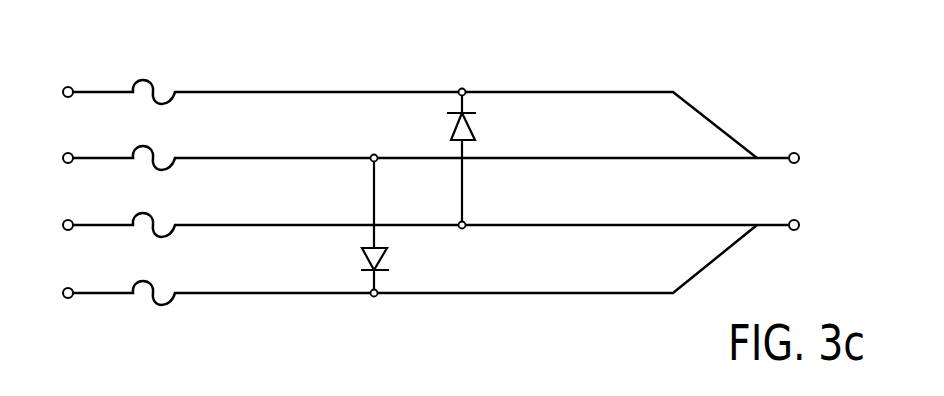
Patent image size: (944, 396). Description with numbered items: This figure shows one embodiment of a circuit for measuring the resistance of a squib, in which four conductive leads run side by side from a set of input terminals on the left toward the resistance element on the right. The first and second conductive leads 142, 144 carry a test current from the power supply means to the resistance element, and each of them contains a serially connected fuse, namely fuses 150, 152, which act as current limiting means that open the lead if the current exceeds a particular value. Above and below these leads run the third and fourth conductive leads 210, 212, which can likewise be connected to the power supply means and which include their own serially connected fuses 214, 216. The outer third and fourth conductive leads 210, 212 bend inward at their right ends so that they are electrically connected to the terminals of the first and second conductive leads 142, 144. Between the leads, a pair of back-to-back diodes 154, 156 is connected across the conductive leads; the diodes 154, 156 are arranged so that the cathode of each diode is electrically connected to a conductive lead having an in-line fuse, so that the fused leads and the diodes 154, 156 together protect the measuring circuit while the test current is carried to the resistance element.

The fuse 214 is at (153, 88).
The fuse 150 is at (153, 154).
The fuse 152 is at (153, 221).
The fuse 216 is at (153, 289).
The third conductive lead 210 is at (572, 92).
The fourth conductive lead 212 is at (572, 294).
The first conductive lead 142 is at (628, 158).
The second conductive lead 144 is at (628, 225).
The diode 154 is at (388, 260).
The diode 156 is at (471, 130).